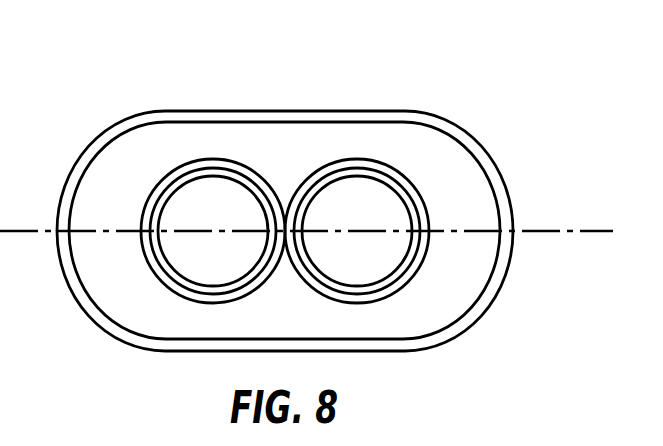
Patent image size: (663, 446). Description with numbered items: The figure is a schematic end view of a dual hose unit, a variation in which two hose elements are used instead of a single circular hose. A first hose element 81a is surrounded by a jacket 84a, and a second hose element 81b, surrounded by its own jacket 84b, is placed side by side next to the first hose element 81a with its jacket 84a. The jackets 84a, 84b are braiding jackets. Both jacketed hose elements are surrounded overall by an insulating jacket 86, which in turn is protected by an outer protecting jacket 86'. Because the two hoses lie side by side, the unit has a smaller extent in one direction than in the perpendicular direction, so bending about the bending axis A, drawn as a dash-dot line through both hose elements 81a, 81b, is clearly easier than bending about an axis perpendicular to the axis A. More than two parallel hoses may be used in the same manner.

The hose element 81a is at (160, 182).
The hose element 81b is at (405, 197).
The jacket 84a is at (188, 162).
The jacket 84b is at (388, 168).
The insulating jacket 86 is at (284, 177).
The outer protecting jacket 86' is at (285, 189).
The bending axis A is at (573, 229).